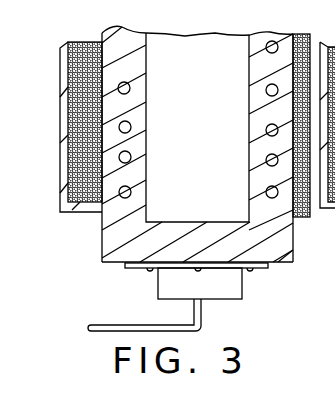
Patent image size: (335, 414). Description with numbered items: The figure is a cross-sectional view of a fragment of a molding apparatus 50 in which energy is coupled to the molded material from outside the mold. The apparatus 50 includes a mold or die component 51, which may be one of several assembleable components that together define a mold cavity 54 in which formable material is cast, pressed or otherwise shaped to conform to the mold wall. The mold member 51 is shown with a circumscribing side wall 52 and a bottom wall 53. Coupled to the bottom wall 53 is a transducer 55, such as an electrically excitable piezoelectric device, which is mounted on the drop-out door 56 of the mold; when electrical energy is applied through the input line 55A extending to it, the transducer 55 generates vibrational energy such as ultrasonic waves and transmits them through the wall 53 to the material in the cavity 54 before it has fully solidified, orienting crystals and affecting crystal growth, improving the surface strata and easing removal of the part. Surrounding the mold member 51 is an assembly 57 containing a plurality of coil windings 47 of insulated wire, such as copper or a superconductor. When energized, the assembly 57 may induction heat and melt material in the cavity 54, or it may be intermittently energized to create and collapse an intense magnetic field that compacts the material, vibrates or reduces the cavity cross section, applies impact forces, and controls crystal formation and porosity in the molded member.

The coil windings 47 is at (78, 42).
The molding apparatus 50 is at (284, 34).
The mold or die component 51 is at (102, 32).
The circumscribing side wall 52 is at (102, 253).
The bottom wall 53 is at (160, 268).
The mold cavity 54 is at (208, 183).
The transducer 55 is at (232, 292).
The input line 55A is at (205, 330).
The drop-out door 56 is at (285, 252).
The assembly 57 is at (58, 208).